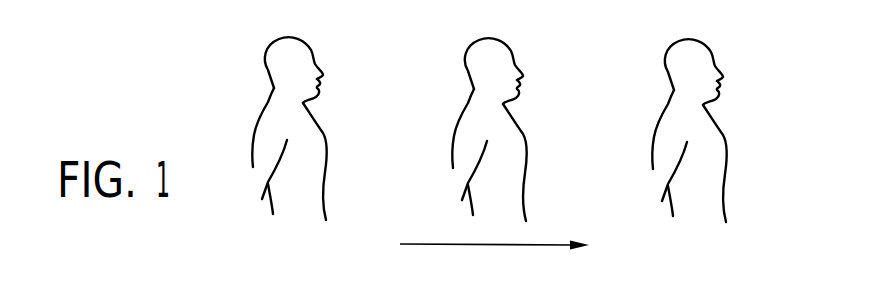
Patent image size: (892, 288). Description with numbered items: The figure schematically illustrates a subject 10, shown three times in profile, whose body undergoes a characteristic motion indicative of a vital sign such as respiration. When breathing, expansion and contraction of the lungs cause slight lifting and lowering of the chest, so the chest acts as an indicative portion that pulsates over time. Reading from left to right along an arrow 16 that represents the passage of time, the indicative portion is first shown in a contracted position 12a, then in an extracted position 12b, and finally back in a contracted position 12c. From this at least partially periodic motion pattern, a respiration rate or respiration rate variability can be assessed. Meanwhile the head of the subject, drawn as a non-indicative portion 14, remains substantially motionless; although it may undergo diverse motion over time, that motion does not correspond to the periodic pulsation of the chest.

The subject 10 is at (286, 116).
The non-indicative portion 14 is at (313, 48).
The contracted position of the indicative portion 12a is at (297, 116).
The extracted position of the indicative portion 12b is at (523, 135).
The contracted position of the indicative portion 12c is at (718, 135).
The arrow 16 is at (449, 244).